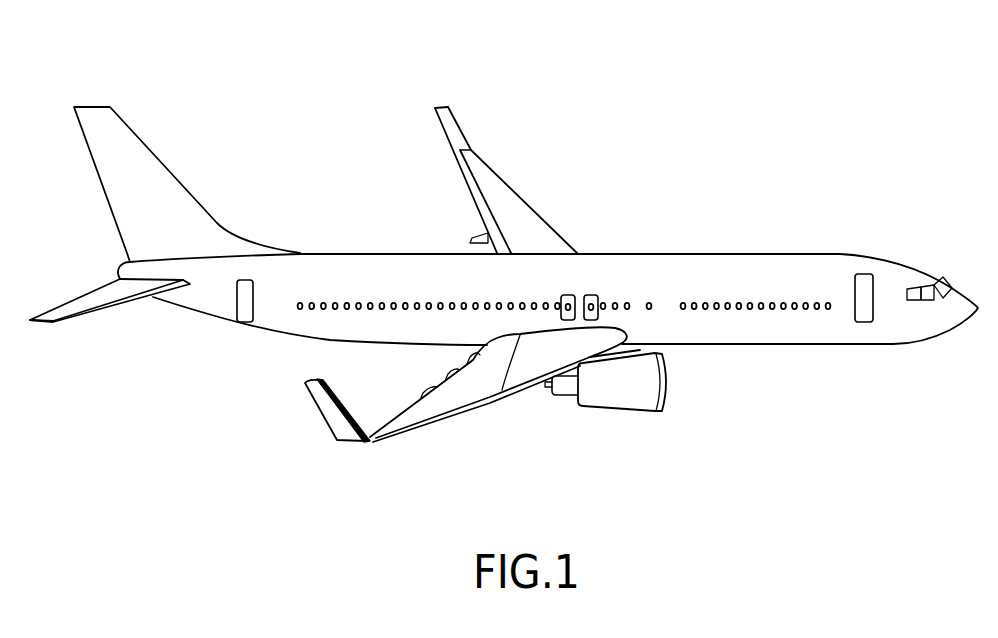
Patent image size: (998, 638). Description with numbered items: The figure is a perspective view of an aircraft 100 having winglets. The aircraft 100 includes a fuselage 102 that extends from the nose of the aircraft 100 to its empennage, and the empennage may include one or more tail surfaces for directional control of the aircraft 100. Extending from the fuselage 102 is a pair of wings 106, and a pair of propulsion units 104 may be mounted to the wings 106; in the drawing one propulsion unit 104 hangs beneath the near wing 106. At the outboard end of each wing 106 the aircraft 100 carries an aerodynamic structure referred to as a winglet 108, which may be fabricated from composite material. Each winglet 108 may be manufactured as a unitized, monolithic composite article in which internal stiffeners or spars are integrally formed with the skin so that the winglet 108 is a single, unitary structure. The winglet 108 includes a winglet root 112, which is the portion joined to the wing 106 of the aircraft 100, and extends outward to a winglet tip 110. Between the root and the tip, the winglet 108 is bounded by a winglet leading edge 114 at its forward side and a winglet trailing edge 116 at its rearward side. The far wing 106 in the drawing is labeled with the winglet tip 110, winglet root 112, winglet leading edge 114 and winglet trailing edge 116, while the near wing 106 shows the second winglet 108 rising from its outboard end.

The aircraft 100 is at (747, 87).
The fuselage 102 is at (840, 254).
The propulsion unit 104 is at (613, 400).
The wing 106 is at (530, 203).
The winglet 108 is at (443, 137).
The winglet tip 110 is at (436, 108).
The winglet root 112 is at (474, 148).
The winglet leading edge 114 is at (456, 118).
The winglet trailing edge 116 is at (466, 150).